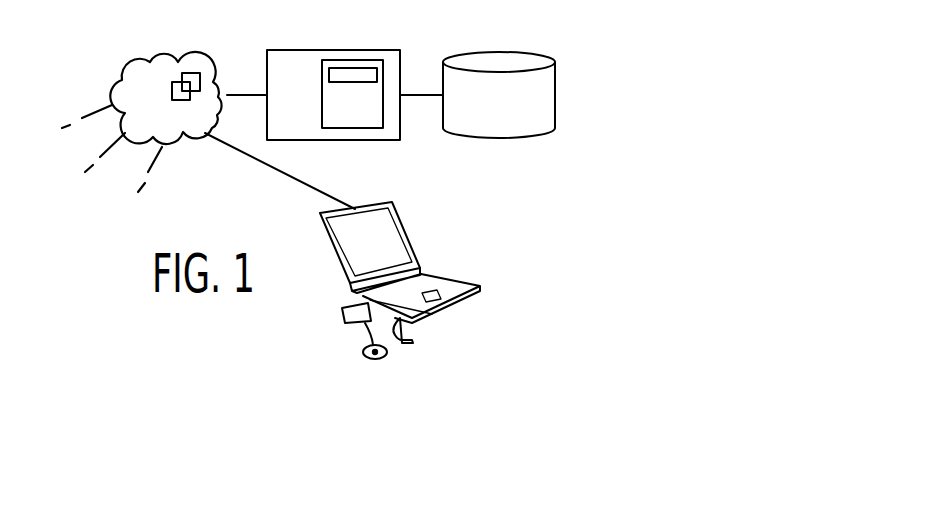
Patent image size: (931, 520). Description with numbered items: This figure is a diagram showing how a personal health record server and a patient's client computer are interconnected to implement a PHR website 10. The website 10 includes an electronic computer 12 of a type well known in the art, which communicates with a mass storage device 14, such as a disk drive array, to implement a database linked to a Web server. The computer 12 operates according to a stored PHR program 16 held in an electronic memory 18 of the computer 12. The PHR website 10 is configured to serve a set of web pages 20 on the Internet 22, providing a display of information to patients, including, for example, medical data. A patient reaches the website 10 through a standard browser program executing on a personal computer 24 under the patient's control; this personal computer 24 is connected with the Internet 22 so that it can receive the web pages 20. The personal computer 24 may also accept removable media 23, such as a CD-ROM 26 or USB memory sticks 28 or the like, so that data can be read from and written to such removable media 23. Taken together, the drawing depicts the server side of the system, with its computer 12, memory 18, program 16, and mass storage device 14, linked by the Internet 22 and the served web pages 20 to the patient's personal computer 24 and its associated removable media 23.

The personal health record website 10 is at (561, 43).
The electronic computer 12 is at (286, 50).
The mass storage device 14 is at (548, 106).
The PHR program 16 is at (351, 73).
The electronic memory 18 is at (357, 122).
The web pages 20 is at (195, 73).
The Internet 22 is at (128, 63).
The removable media 23 is at (413, 361).
The personal computer 24 is at (437, 219).
The CD-ROM 26 is at (366, 358).
The USB memory stick 28 is at (414, 341).